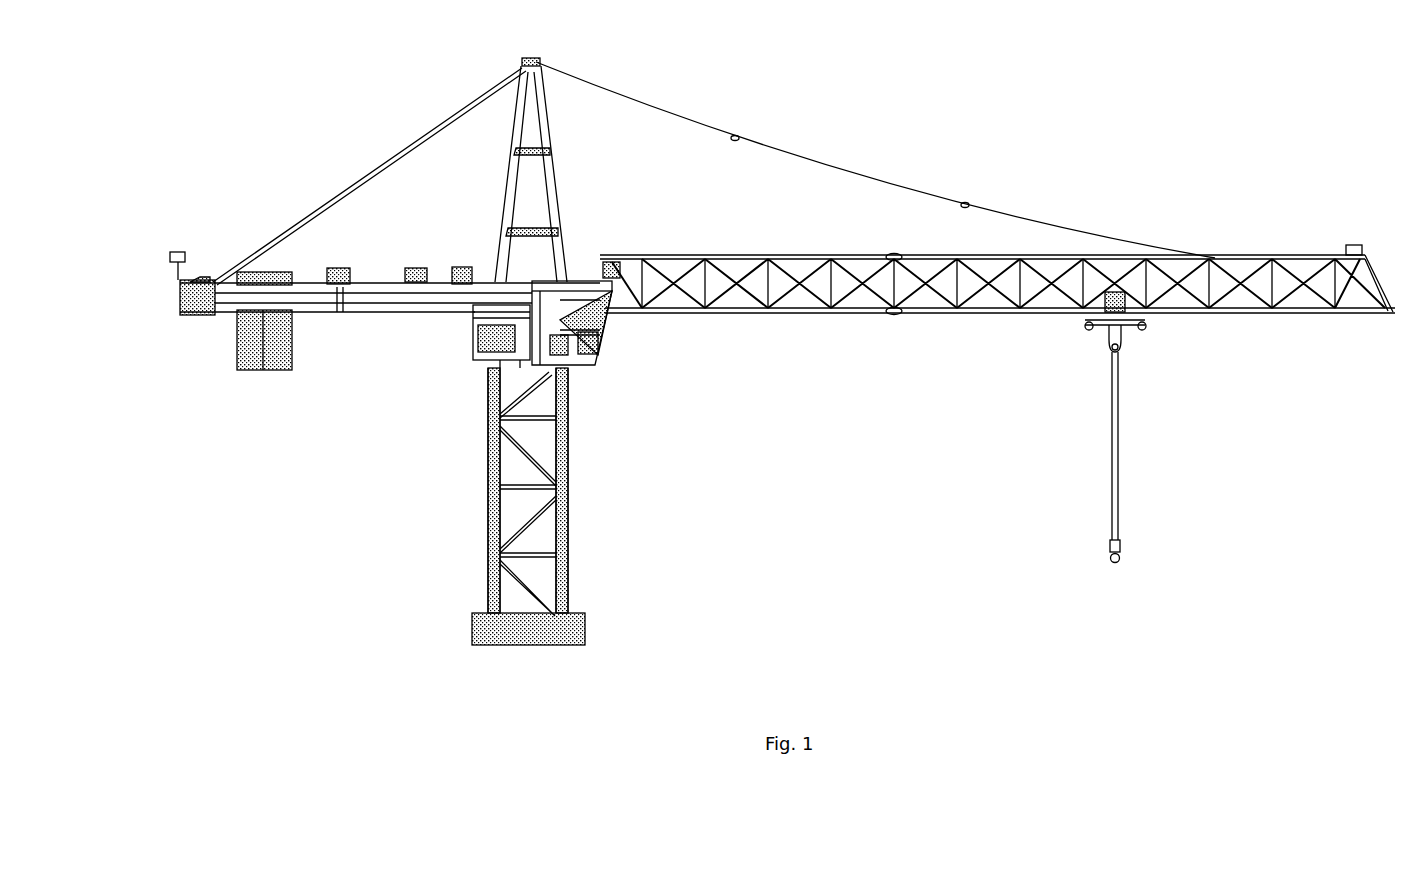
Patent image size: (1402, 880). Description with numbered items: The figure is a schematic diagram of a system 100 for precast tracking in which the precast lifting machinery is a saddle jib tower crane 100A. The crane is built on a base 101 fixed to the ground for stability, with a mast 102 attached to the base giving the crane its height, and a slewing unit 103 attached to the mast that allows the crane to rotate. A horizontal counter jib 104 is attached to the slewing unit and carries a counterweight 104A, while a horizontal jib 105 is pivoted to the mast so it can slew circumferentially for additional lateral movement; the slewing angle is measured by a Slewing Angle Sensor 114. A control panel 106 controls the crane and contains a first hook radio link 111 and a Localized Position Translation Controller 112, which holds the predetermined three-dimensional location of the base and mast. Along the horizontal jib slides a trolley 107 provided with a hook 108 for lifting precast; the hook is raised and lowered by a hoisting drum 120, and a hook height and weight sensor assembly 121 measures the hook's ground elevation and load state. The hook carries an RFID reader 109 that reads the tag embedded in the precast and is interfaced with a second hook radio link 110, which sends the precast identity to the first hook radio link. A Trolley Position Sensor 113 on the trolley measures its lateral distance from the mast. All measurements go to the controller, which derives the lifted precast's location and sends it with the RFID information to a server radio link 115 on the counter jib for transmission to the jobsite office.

The system for precast tracking 100 is at (1212, 62).
The saddle jib tower crane 100A is at (832, 168).
The base 101 is at (521, 632).
The mast 102 is at (566, 598).
The slewing unit 103 is at (492, 356).
The horizontal counter jib 104 is at (200, 318).
The counterweight 104A is at (246, 362).
The horizontal jib 105 is at (832, 257).
The control panel 106 is at (580, 281).
The trolley 107 is at (1146, 327).
The hook 108 is at (1120, 560).
The RFID reader 109 is at (1111, 556).
The second hook radio link 110 is at (1121, 543).
The first hook radio link 111 is at (604, 356).
The Localized Position Translation Controller (LPTC) 112 is at (574, 366).
The Trolley Position Sensor (TPS) 113 is at (1112, 296).
The Slewing Angle Sensor (SAS) 114 is at (416, 290).
The server radio link 115 is at (324, 262).
The hoisting drum 120 is at (208, 272).
The hook height and weight sensor assembly (HHS) 121 is at (462, 268).